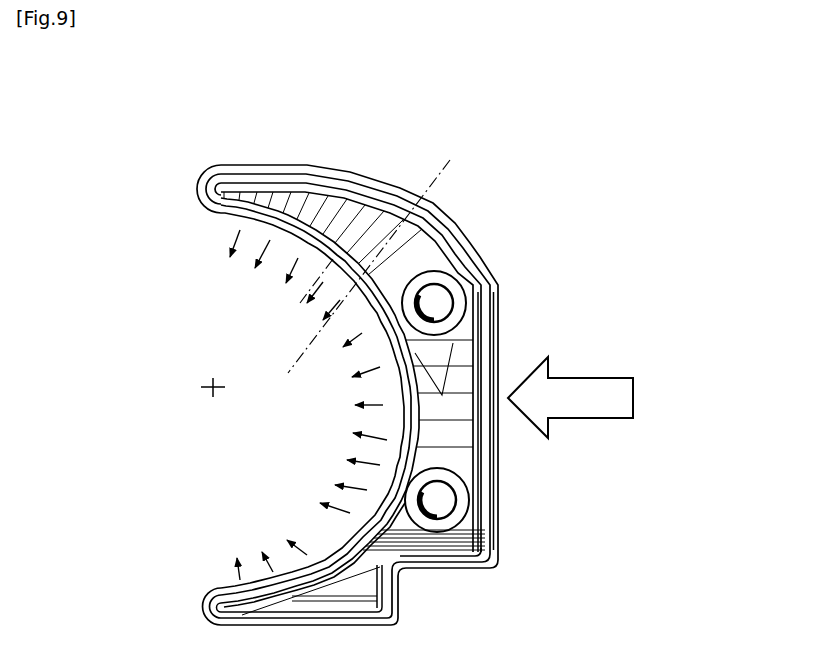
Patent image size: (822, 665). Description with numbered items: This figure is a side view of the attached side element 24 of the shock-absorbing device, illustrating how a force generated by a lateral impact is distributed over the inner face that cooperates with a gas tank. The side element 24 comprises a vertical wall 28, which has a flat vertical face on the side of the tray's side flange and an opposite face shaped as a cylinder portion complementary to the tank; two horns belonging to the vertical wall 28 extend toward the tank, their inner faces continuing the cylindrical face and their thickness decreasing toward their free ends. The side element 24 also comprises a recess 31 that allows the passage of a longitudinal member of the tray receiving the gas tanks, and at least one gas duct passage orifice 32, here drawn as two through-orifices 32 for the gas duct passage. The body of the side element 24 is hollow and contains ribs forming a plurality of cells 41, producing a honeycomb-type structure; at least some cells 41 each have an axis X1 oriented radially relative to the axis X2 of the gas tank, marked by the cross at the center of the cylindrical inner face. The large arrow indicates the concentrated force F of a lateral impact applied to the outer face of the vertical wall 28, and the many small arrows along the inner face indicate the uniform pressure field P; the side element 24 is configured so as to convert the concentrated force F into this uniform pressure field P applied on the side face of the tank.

The attached side element 24 is at (577, 191).
The vertical wall 28 is at (463, 377).
The recess 31 is at (407, 588).
The gas duct passage orifice 32 is at (442, 300).
The cell 41 is at (368, 197).
The axis of cell X1 is at (432, 188).
The axis of gas tank X2 is at (208, 391).
The uniform pressure field P is at (295, 270).
The concentrated force F is at (597, 402).